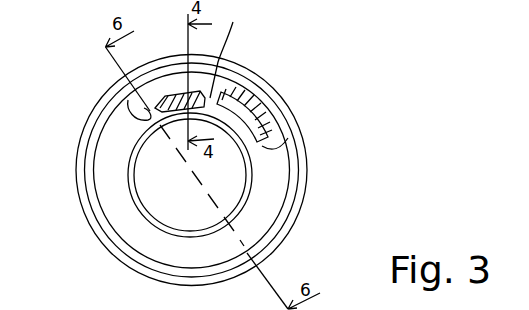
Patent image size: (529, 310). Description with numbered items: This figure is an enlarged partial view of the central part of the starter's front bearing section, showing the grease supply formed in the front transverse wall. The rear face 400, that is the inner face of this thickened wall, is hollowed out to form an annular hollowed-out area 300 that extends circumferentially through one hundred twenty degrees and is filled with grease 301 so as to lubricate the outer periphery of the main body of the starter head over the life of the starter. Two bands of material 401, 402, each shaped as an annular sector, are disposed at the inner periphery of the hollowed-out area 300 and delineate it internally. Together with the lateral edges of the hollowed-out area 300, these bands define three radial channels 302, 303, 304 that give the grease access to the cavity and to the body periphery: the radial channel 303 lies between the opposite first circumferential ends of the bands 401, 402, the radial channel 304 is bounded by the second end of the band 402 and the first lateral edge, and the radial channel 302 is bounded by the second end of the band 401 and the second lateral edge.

The hollowed-out area 300 is at (214, 64).
The grease 301 is at (300, 158).
The radial channel 302 is at (288, 138).
The radial channel 303 is at (214, 90).
The radial channel 304 is at (140, 120).
The rear face 400 is at (113, 196).
The band of material 401 is at (262, 130).
The band of material 402 is at (236, 50).